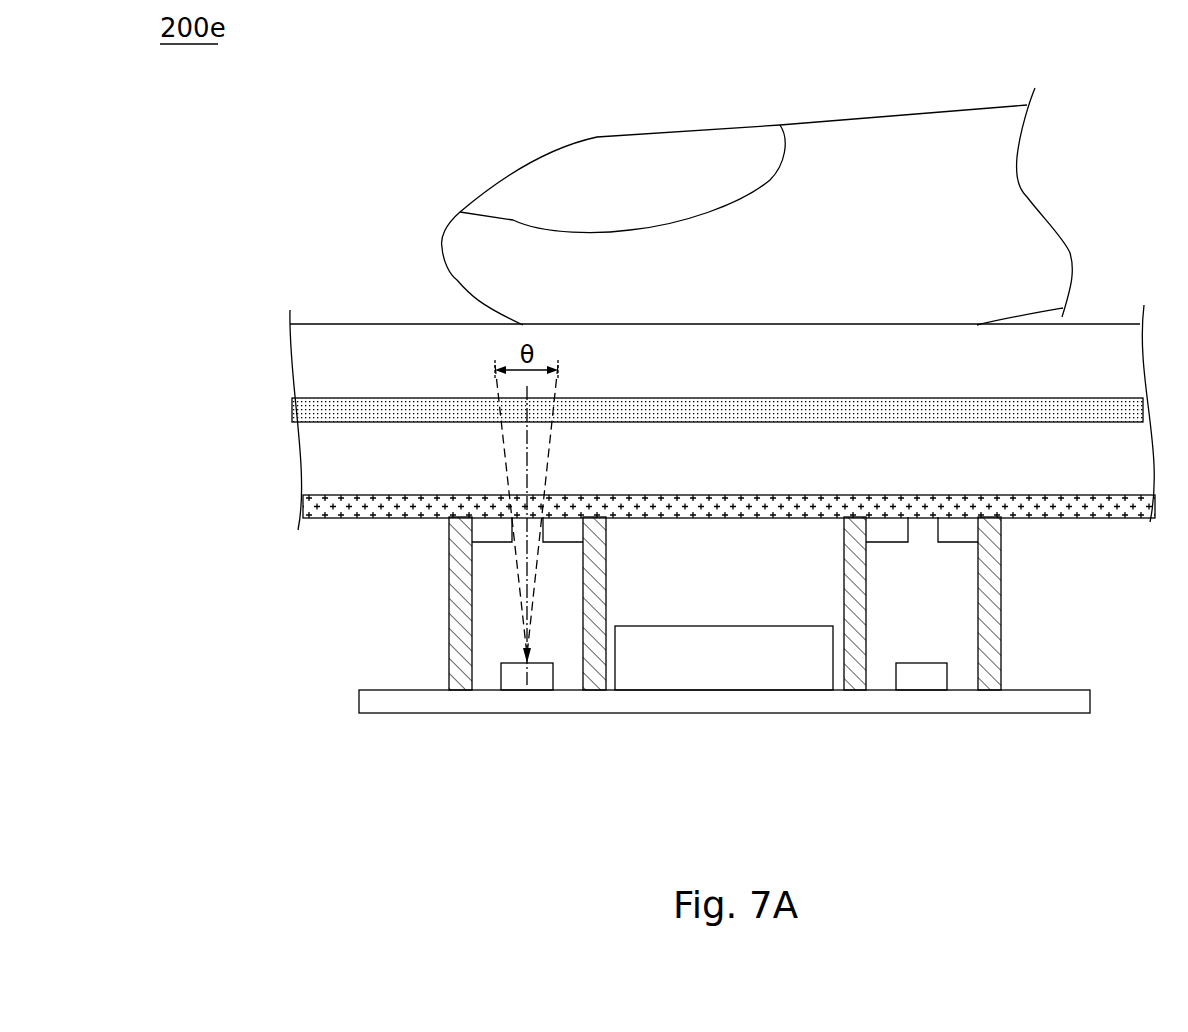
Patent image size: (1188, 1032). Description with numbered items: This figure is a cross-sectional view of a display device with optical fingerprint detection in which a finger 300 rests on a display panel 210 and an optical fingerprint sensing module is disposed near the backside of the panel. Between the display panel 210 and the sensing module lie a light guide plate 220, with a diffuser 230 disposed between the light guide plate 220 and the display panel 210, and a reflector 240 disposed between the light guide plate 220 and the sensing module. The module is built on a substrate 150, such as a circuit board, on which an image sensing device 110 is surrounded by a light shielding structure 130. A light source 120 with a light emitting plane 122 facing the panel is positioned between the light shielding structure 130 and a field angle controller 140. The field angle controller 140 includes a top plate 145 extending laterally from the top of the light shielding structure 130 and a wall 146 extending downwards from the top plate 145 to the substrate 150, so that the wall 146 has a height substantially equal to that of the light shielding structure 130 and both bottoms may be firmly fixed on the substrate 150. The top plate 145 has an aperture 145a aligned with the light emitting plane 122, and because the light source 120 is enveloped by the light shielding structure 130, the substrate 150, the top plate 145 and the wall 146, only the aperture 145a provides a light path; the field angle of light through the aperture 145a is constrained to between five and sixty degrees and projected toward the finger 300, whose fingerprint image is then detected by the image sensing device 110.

The finger 300 is at (857, 135).
The display panel 210 is at (298, 360).
The diffuser 230 is at (300, 410).
The light guide plate 220 is at (318, 460).
The reflector 240 is at (320, 505).
The image sensing device 110 is at (665, 677).
The light shielding structure 130 is at (853, 677).
The light source 120 is at (913, 678).
The light emitting plane 122 is at (930, 665).
The substrate 150 is at (1050, 702).
The field angle controller 140 is at (1014, 603).
The top plate 145 is at (968, 532).
The aperture 145a is at (927, 548).
The wall 146 is at (992, 657).